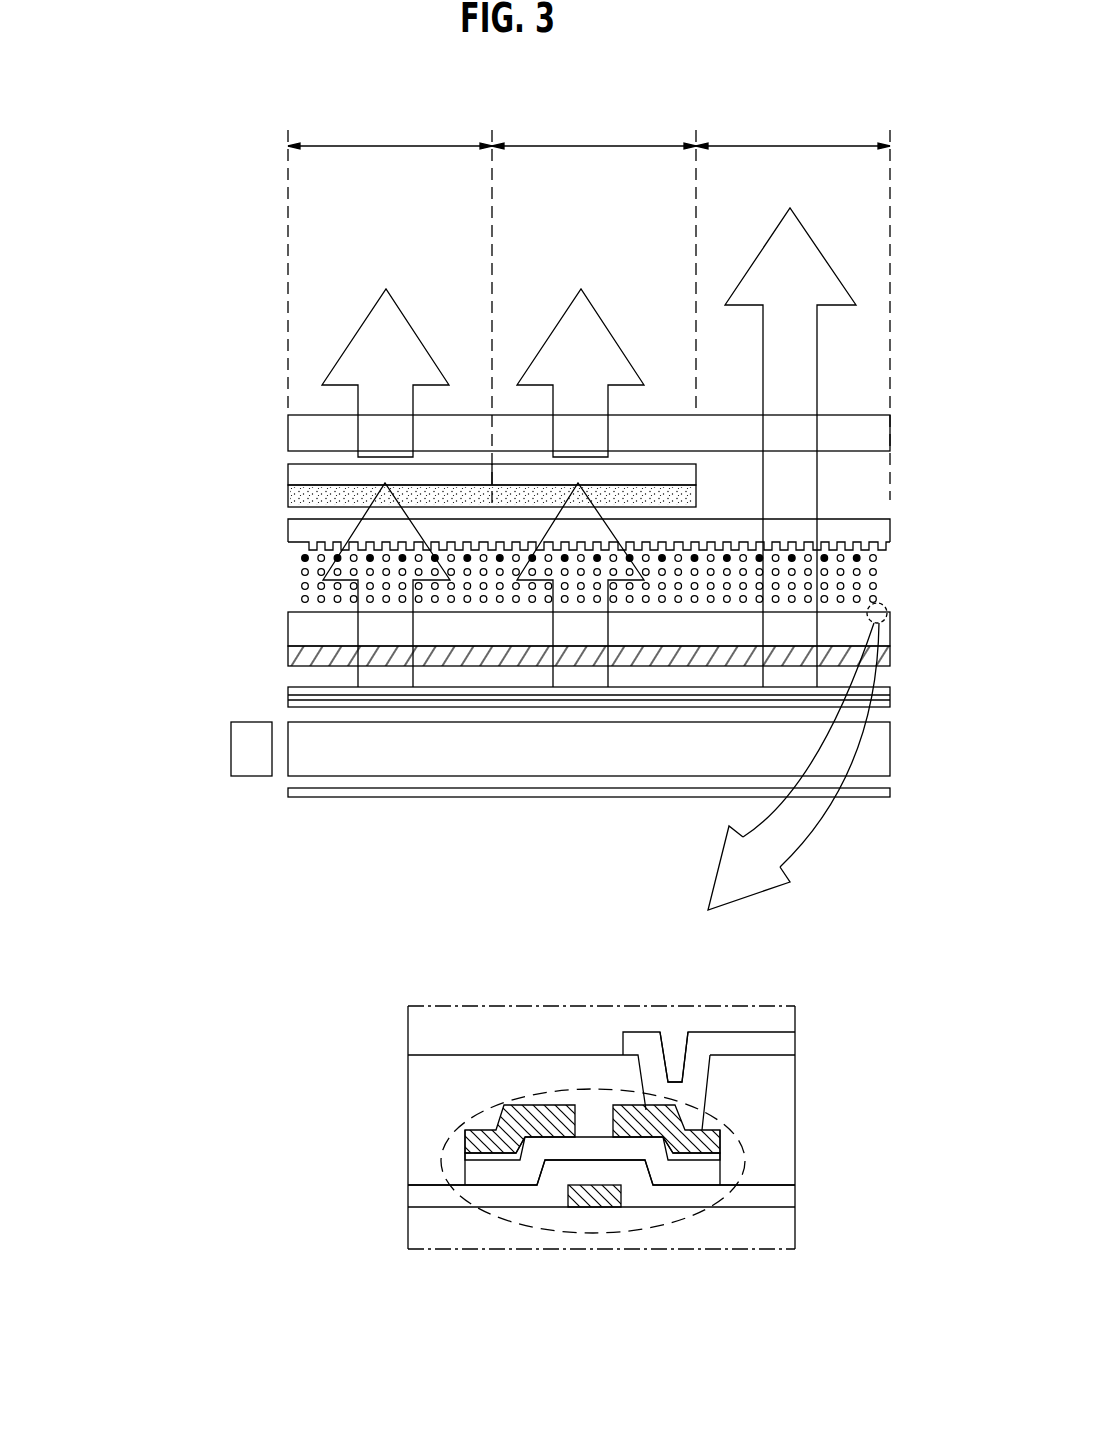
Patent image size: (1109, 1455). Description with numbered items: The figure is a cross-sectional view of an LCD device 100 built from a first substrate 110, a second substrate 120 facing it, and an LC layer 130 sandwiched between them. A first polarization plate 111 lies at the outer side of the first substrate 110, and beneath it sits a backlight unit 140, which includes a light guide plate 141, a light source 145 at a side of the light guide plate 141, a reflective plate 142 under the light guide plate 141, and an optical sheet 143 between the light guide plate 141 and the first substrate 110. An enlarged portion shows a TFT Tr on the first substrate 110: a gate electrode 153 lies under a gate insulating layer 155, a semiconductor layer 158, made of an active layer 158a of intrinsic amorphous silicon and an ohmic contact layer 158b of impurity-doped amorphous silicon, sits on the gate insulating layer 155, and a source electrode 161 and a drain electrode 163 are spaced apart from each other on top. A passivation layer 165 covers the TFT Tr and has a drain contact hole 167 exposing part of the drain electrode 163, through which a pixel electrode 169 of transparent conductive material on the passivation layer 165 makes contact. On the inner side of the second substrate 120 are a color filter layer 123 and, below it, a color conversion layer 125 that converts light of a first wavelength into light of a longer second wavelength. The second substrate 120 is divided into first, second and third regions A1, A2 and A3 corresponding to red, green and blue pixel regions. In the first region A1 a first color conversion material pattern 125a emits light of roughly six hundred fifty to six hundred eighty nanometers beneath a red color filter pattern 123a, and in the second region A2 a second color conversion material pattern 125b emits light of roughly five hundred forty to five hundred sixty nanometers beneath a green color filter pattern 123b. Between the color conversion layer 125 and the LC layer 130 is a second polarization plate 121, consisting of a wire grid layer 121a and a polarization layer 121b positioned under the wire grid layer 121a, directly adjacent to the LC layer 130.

The LCD device 100 is at (623, 75).
The first region A1 is at (390, 263).
The second region A2 is at (594, 309).
The third region A3 is at (793, 306).
The first substrate 110 is at (288, 613).
The first polarization plate 111 is at (288, 653).
The second substrate 120 is at (288, 433).
The second polarization plate 121 is at (167, 532).
The wire grid layer 121a is at (288, 527).
The polarization layer 121b is at (560, 581).
The color filter layer 123 is at (545, 242).
The red color filter pattern 123a is at (443, 478).
The green color filter pattern 123b is at (518, 478).
The color conversion layer 125 is at (168, 438).
The first color conversion material pattern 125a is at (288, 486).
The second color conversion material pattern 125b is at (288, 507).
The LC layer 130 is at (894, 557).
The backlight unit 140 is at (118, 863).
The light guide plate 141 is at (288, 778).
The reflective plate 142 is at (305, 797).
The optical sheet 143 is at (288, 697).
The light source 145 is at (228, 749).
The gate electrode 153 is at (606, 1200).
The gate insulating layer 155 is at (695, 1198).
The semiconductor layer 158 is at (540, 1305).
The active layer 158a is at (488, 1173).
The ohmic contact layer 158b is at (547, 1135).
The source electrode 161 is at (530, 1117).
The drain electrode 163 is at (646, 1117).
The passivation layer 165 is at (760, 1115).
The drain contact hole 167 is at (672, 1052).
The pixel electrode 169 is at (733, 1043).
The TFT Tr is at (658, 1232).